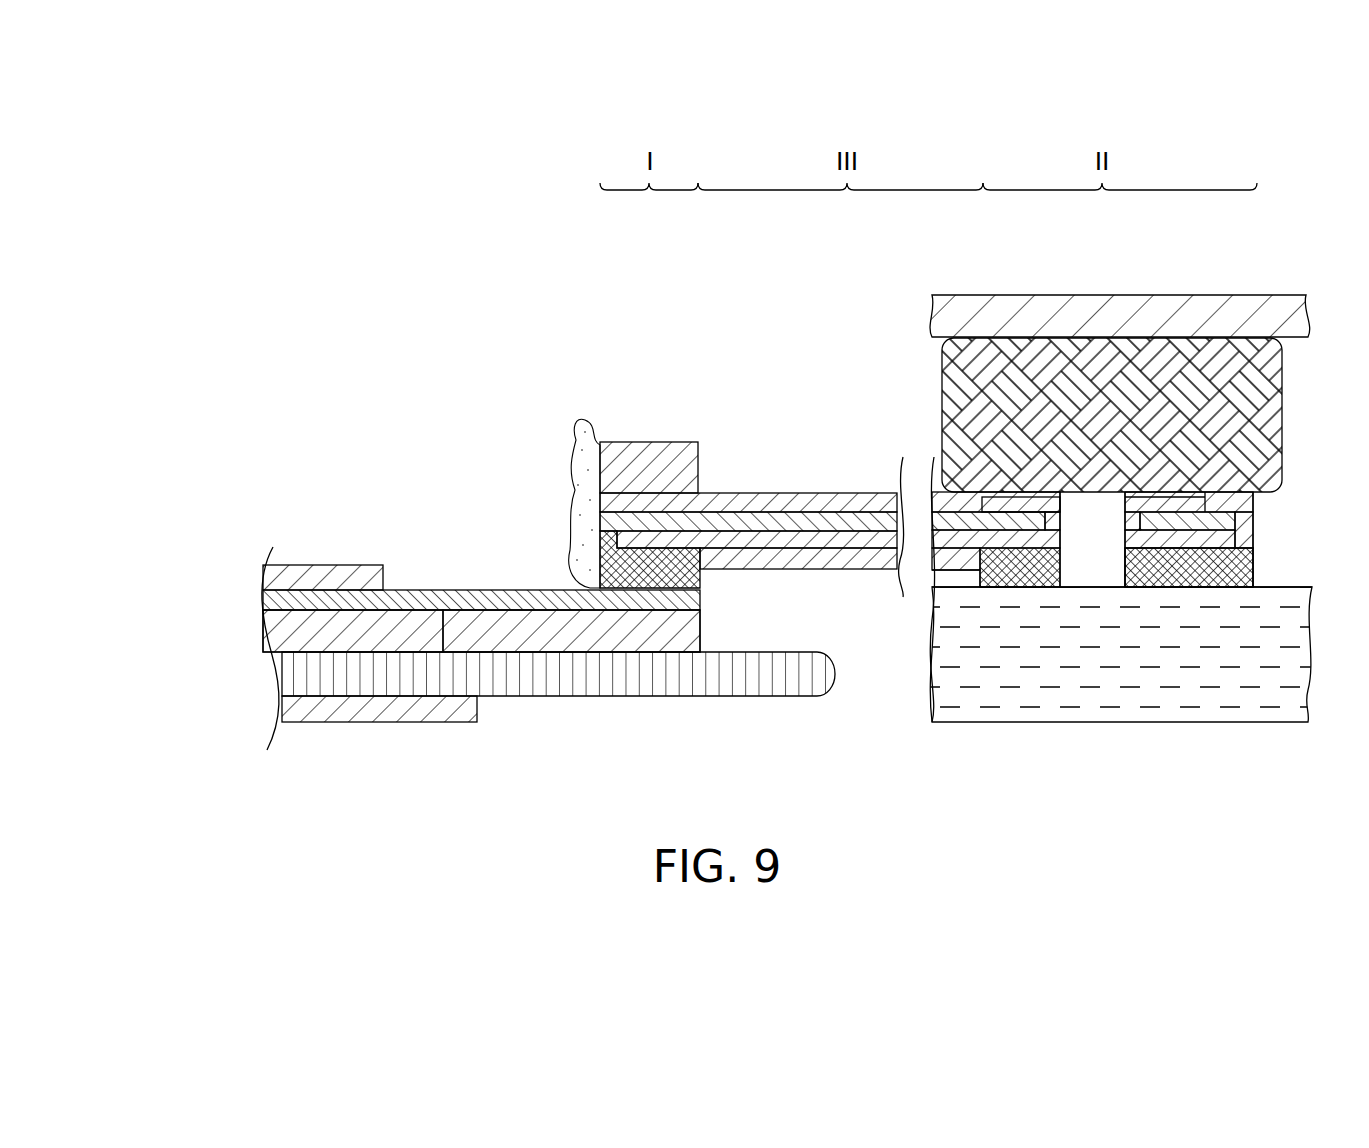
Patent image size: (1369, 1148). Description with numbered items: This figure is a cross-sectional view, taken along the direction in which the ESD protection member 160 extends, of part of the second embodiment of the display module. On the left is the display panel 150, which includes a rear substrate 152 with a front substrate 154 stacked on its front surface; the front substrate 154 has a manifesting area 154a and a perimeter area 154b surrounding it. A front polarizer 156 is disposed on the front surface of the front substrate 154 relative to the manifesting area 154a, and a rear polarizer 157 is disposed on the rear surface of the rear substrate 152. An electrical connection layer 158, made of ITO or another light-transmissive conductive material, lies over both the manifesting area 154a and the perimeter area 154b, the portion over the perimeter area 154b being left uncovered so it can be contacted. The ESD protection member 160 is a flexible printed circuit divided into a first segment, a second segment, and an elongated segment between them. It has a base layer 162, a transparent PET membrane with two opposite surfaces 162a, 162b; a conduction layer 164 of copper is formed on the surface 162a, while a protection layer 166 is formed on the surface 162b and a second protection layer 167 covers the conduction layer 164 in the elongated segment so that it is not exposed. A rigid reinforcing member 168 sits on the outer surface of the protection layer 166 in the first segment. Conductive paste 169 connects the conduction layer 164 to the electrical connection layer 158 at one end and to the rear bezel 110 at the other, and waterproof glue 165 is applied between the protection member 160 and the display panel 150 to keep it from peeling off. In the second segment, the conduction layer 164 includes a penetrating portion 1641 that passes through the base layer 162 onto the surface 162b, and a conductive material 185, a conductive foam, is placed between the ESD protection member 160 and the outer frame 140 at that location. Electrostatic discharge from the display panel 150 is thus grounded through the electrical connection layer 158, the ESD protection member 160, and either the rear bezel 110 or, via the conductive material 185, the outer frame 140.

The rear bezel 110 is at (987, 691).
The outer frame 140 is at (1205, 318).
The display panel 150 is at (143, 435).
The rear substrate 152 is at (318, 674).
The front substrate 154 is at (327, 632).
The manifesting area 154a is at (352, 640).
The perimeter area 154b is at (513, 637).
The front polarizer 156 is at (342, 592).
The rear polarizer 157 is at (308, 712).
The electrical connection layer 158 is at (334, 580).
The ESD protection member 160 is at (861, 434).
The base layer 162 is at (757, 522).
The surface 162a is at (1252, 542).
The surface 162b is at (1255, 508).
The conduction layer 164 is at (760, 548).
The penetrating portion 1641 is at (1160, 590).
The waterproof glue 165 is at (578, 445).
The protection layer 166 is at (822, 500).
The protection layer 167 is at (845, 569).
The reinforcing member 168 is at (660, 452).
The conductive paste 169 is at (600, 575).
The conductive material 185 is at (1063, 378).